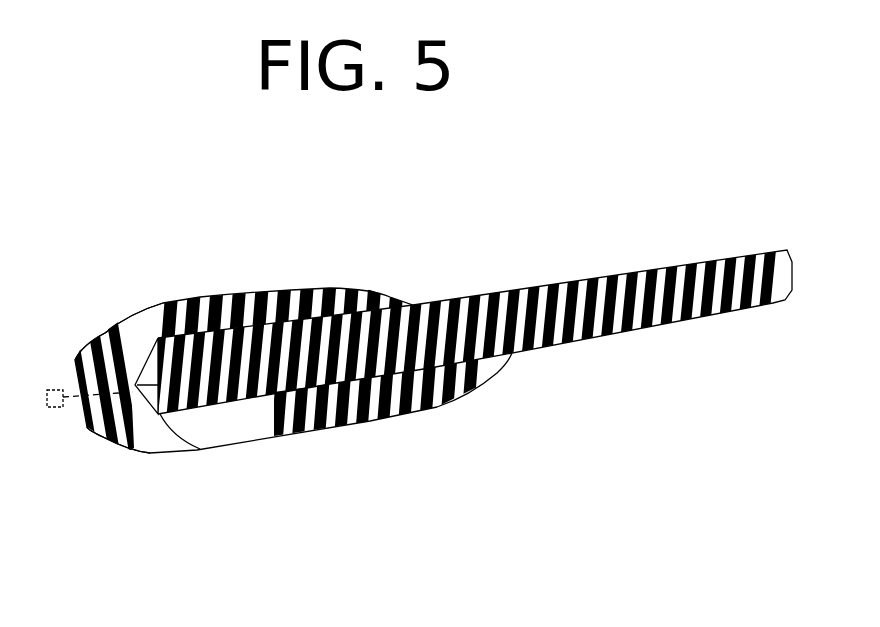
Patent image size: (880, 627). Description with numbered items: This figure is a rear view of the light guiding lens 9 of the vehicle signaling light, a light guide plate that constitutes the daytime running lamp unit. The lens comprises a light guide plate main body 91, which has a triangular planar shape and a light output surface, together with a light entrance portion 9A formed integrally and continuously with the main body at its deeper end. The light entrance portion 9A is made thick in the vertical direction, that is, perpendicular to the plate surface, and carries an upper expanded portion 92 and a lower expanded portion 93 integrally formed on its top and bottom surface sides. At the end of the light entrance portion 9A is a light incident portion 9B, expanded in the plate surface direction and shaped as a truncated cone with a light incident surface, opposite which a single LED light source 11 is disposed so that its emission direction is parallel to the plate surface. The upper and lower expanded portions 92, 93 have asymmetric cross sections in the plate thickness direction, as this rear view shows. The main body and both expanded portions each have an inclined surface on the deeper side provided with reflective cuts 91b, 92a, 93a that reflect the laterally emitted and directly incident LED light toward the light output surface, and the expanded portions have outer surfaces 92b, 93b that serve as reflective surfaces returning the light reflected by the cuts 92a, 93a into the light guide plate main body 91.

The light guiding lens 9 is at (474, 293).
The light entrance portion 9A is at (152, 307).
The light incident portion 9B is at (133, 452).
The LED light source 11 is at (52, 410).
The light guide plate main body 91 is at (530, 352).
The reflective cuts 91b is at (590, 293).
The upper expanded portion 92 is at (217, 300).
The reflective cuts 92a is at (279, 300).
The outer surface 92b is at (336, 293).
The lower expanded portion 93 is at (277, 423).
The reflective cuts 93a is at (350, 424).
The outer surface 93b is at (403, 415).